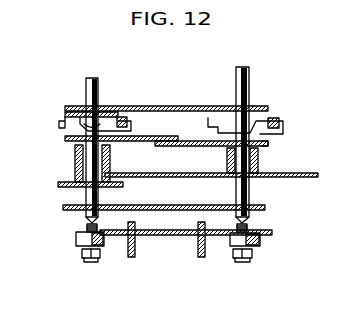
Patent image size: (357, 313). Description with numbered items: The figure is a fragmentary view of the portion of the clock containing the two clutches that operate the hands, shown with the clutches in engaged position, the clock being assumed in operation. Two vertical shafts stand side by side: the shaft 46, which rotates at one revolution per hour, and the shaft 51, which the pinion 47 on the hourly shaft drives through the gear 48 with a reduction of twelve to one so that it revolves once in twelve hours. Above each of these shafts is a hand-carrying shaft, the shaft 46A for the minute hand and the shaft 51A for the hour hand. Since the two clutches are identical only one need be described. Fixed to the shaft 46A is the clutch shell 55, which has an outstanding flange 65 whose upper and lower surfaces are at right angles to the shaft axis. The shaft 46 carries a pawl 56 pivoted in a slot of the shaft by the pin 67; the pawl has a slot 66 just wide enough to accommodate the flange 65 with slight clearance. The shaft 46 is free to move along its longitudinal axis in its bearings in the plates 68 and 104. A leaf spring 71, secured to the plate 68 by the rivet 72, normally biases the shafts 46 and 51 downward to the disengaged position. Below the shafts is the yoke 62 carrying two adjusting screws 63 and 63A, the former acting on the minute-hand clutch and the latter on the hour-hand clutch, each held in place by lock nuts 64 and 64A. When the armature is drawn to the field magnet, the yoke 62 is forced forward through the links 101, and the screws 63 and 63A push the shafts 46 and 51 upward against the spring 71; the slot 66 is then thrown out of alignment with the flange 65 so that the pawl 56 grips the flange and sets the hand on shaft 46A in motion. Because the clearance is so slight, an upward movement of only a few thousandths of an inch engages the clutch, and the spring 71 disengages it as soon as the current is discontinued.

The shaft 46A is at (86, 88).
The shaft 46 is at (88, 215).
The shaft 51A is at (237, 78).
The shaft 51 is at (250, 190).
The clutch shell 55 is at (65, 114).
The flange 65 is at (62, 124).
The pin 67 is at (82, 125).
The slot 66 is at (123, 118).
The pawl 56 is at (133, 128).
The leaf spring 71 is at (118, 142).
The rivet 72 is at (168, 146).
The plate 68 is at (268, 140).
The gear 48 is at (305, 173).
The pinion 47 is at (78, 177).
The plate 104 is at (203, 205).
The yoke 62 is at (142, 236).
The links 101 is at (128, 250).
The lock nut 64 is at (78, 240).
The lock nut 64A is at (260, 239).
The adjusting screw 63 is at (83, 255).
The adjusting screw 63A is at (252, 255).